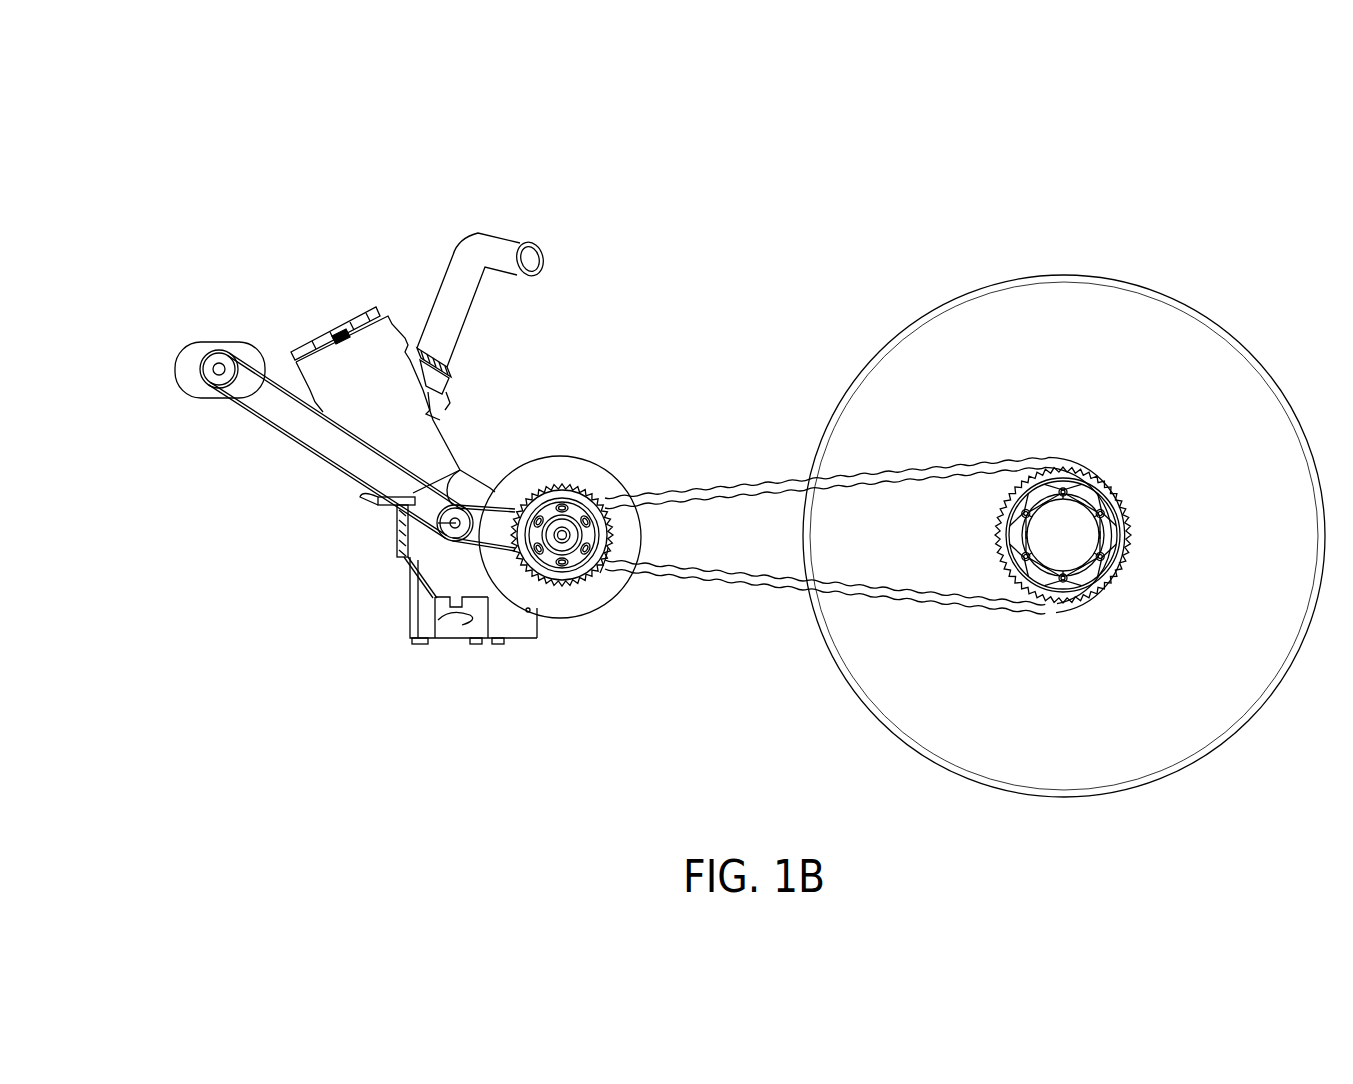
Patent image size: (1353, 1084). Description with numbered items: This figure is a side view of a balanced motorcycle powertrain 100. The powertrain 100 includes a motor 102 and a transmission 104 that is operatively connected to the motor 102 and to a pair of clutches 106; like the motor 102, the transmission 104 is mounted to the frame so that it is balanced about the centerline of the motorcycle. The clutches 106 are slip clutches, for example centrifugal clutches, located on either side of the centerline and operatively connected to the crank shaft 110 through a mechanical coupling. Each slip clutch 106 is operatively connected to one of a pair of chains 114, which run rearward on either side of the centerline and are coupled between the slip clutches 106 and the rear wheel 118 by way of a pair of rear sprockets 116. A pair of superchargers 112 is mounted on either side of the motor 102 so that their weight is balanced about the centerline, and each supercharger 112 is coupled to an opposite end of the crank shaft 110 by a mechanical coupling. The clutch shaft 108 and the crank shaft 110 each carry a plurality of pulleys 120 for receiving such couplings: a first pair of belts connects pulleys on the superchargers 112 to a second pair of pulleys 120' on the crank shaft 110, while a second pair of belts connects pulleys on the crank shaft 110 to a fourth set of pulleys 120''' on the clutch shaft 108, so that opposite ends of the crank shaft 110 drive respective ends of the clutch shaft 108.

The motorcycle powertrain 100 is at (214, 148).
The motor 102 is at (361, 318).
The transmission 104 is at (547, 456).
The clutch 106 is at (554, 586).
The clutch shaft 108 is at (580, 483).
The crank shaft 110 is at (410, 548).
The supercharger 112 is at (215, 342).
The chain 114 is at (745, 592).
The rear sprocket 116 is at (1058, 608).
The rear wheel 118 is at (1062, 275).
The pulley 120 is at (171, 374).
The second pair of pulleys 120' is at (489, 444).
The fourth set of pulleys 120''' is at (647, 593).